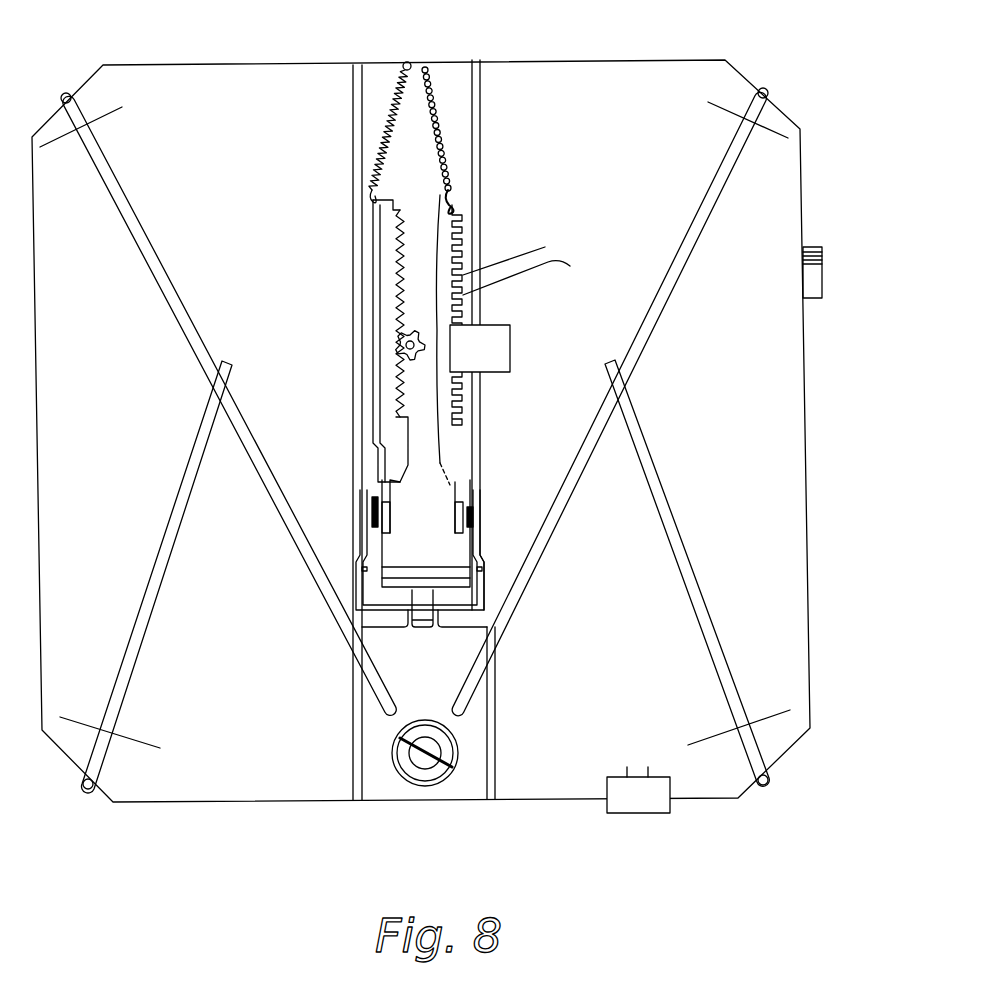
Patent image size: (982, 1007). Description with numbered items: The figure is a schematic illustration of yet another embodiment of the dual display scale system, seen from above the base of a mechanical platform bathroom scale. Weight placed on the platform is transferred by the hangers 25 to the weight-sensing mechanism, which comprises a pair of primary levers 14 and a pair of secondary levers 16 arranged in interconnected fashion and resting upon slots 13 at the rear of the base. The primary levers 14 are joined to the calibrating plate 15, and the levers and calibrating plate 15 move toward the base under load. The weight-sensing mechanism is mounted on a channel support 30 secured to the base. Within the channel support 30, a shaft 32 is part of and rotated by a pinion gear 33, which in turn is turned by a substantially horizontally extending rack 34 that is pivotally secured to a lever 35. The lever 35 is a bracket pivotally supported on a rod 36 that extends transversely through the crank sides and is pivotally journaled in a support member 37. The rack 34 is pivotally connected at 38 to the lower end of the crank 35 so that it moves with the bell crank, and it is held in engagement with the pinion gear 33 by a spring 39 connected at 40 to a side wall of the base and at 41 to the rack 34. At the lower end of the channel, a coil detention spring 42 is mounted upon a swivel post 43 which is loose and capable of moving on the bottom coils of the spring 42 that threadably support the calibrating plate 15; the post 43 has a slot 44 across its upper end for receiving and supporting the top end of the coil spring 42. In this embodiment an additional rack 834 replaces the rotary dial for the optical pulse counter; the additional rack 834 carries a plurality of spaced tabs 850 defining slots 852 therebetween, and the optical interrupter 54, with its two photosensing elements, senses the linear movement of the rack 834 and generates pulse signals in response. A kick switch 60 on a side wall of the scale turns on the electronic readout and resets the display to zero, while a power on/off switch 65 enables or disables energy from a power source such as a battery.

The slots 13 is at (66, 94).
The primary levers 14 is at (180, 292).
The calibrating plate 15 is at (477, 733).
The secondary levers 16 is at (172, 545).
The hangers 25 is at (100, 120).
The channel support 30 is at (478, 247).
The shaft 32 is at (412, 338).
The pinion gear 33 is at (403, 350).
The rack 34 is at (398, 460).
The lever 35 is at (382, 493).
The rod 36 is at (407, 583).
The support member 37 is at (478, 553).
The pivotal connection 38 is at (425, 612).
The spring 39 is at (405, 110).
The spring connection to base 40 is at (412, 66).
The spring connection to rack 41 is at (370, 196).
The coil detention spring 42 is at (395, 768).
The swivel post 43 is at (450, 752).
The slot 44 is at (427, 760).
The optical interrupter 54 is at (512, 350).
The kick switch 60 is at (670, 783).
The power on/off switch 65 is at (822, 275).
The additional rack 834 is at (452, 212).
The tabs 850 is at (530, 251).
The slots 852 is at (547, 275).